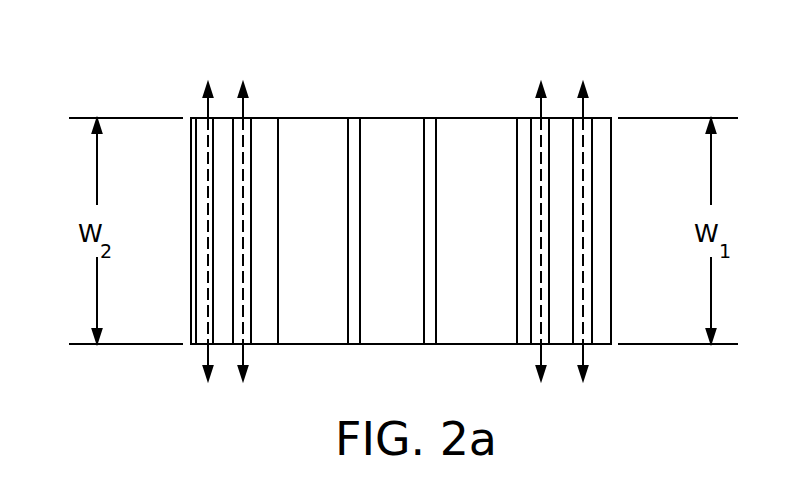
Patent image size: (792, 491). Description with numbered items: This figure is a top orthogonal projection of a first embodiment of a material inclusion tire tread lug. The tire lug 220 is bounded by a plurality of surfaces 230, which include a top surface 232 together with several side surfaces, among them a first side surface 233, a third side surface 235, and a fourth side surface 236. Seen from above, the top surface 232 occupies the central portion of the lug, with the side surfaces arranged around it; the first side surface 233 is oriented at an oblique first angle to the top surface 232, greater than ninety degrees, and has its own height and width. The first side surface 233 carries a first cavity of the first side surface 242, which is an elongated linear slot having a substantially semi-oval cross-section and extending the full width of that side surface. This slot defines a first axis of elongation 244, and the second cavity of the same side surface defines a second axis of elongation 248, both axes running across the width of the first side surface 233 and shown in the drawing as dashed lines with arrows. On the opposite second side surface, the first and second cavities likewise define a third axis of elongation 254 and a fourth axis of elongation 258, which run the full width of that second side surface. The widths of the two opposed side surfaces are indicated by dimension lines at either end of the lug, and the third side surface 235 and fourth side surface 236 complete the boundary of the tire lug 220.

The tire lug 220 is at (611, 232).
The plurality of surfaces 230 is at (182, 352).
The top surface 232 is at (394, 168).
The first side surface 233 is at (562, 150).
The third side surface 235 is at (454, 357).
The fourth side surface 236 is at (312, 99).
The first cavity of the first side surface 242 is at (556, 363).
The first axis of elongation 244 is at (537, 115).
The second axis of elongation 248 is at (585, 349).
The third axis of elongation 254 is at (237, 114).
The fourth axis of elongation 258 is at (183, 116).